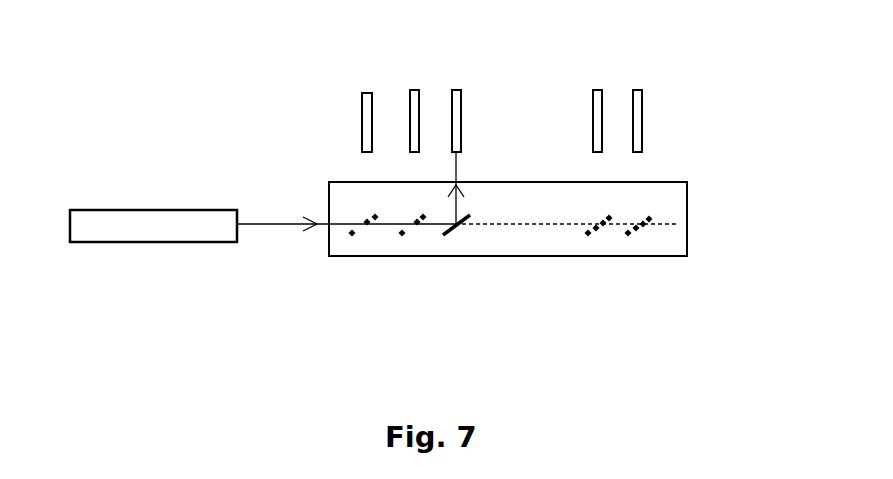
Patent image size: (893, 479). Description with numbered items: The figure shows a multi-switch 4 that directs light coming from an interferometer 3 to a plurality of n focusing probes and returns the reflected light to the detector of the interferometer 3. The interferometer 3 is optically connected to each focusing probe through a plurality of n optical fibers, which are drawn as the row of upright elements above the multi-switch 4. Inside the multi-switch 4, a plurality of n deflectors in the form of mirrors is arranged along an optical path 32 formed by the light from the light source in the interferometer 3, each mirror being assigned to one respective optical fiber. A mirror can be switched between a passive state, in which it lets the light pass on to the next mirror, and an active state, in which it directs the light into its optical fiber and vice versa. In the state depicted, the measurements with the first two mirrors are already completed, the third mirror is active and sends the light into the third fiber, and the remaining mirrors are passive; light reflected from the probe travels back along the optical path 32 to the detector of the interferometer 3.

The interferometer 3 is at (177, 216).
The optical path 32 is at (280, 228).
The multi-switch 4 is at (677, 193).